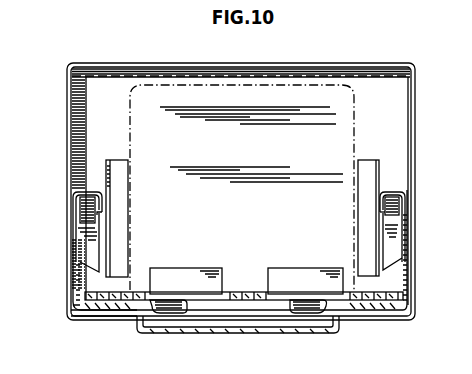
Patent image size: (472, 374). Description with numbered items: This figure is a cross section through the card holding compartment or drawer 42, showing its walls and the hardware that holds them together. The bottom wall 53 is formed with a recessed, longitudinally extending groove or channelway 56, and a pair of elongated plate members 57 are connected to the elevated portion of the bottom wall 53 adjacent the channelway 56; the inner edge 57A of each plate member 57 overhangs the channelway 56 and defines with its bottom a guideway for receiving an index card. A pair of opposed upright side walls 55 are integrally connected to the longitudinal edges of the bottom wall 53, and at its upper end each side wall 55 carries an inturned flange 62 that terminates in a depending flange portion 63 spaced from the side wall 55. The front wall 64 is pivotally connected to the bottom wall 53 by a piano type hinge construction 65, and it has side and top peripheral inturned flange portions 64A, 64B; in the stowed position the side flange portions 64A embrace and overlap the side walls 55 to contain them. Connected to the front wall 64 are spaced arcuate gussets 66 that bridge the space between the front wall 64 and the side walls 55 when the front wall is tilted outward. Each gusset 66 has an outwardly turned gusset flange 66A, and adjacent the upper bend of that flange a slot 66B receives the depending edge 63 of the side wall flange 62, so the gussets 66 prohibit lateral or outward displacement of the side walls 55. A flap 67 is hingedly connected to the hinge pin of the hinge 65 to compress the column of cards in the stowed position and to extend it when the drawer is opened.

The card holding compartment 42 is at (140, 58).
The front wall 64 is at (404, 112).
The top peripheral inturned flange portion 64B is at (326, 72).
The side peripheral inturned flange portion 64A is at (77, 122).
The flap 67 is at (341, 104).
The gusset 66 is at (106, 172).
The inturned flange 62 is at (81, 189).
The depending flange portion 63 is at (100, 205).
The slot 66B is at (99, 215).
The gusset flange 66A is at (88, 234).
The side wall 55 is at (77, 246).
The piano type hinge construction 65 is at (392, 296).
The elongated plate member 57 is at (175, 303).
The inner edge 57A is at (246, 281).
The channelway 56 is at (270, 330).
The bottom wall 53 is at (126, 308).